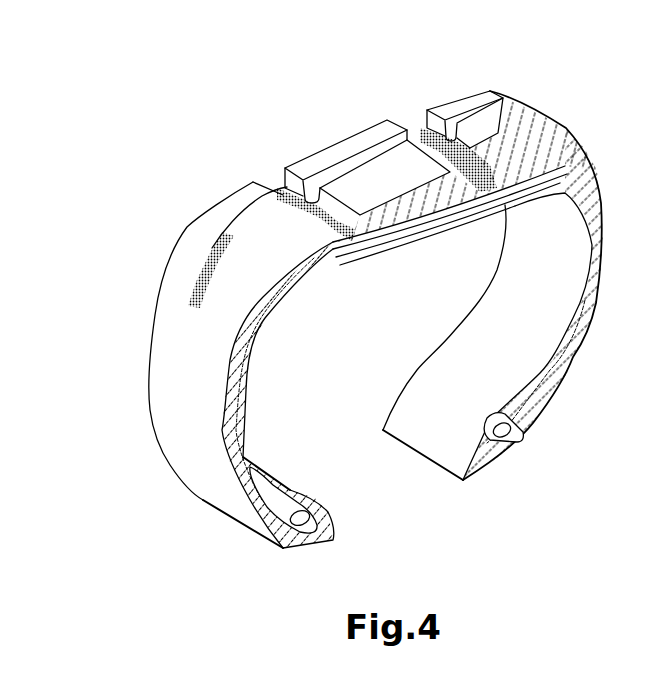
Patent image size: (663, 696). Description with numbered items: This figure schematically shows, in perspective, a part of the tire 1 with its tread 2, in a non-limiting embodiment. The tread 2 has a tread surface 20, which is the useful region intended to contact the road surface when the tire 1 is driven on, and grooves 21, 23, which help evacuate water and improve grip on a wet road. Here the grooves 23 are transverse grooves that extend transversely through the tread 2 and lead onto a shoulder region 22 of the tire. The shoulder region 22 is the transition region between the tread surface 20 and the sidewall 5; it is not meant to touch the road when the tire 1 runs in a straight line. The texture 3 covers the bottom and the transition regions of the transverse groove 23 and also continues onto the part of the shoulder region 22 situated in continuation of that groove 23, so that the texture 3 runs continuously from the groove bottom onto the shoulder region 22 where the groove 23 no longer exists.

The tire 1 is at (143, 141).
The tread 2 is at (135, 262).
The texture 3 is at (516, 149).
The sidewall 5 is at (148, 313).
The tread surface 20 is at (510, 157).
The groove 21 is at (415, 127).
The shoulder region 22 is at (172, 253).
The transverse groove 23 is at (227, 237).